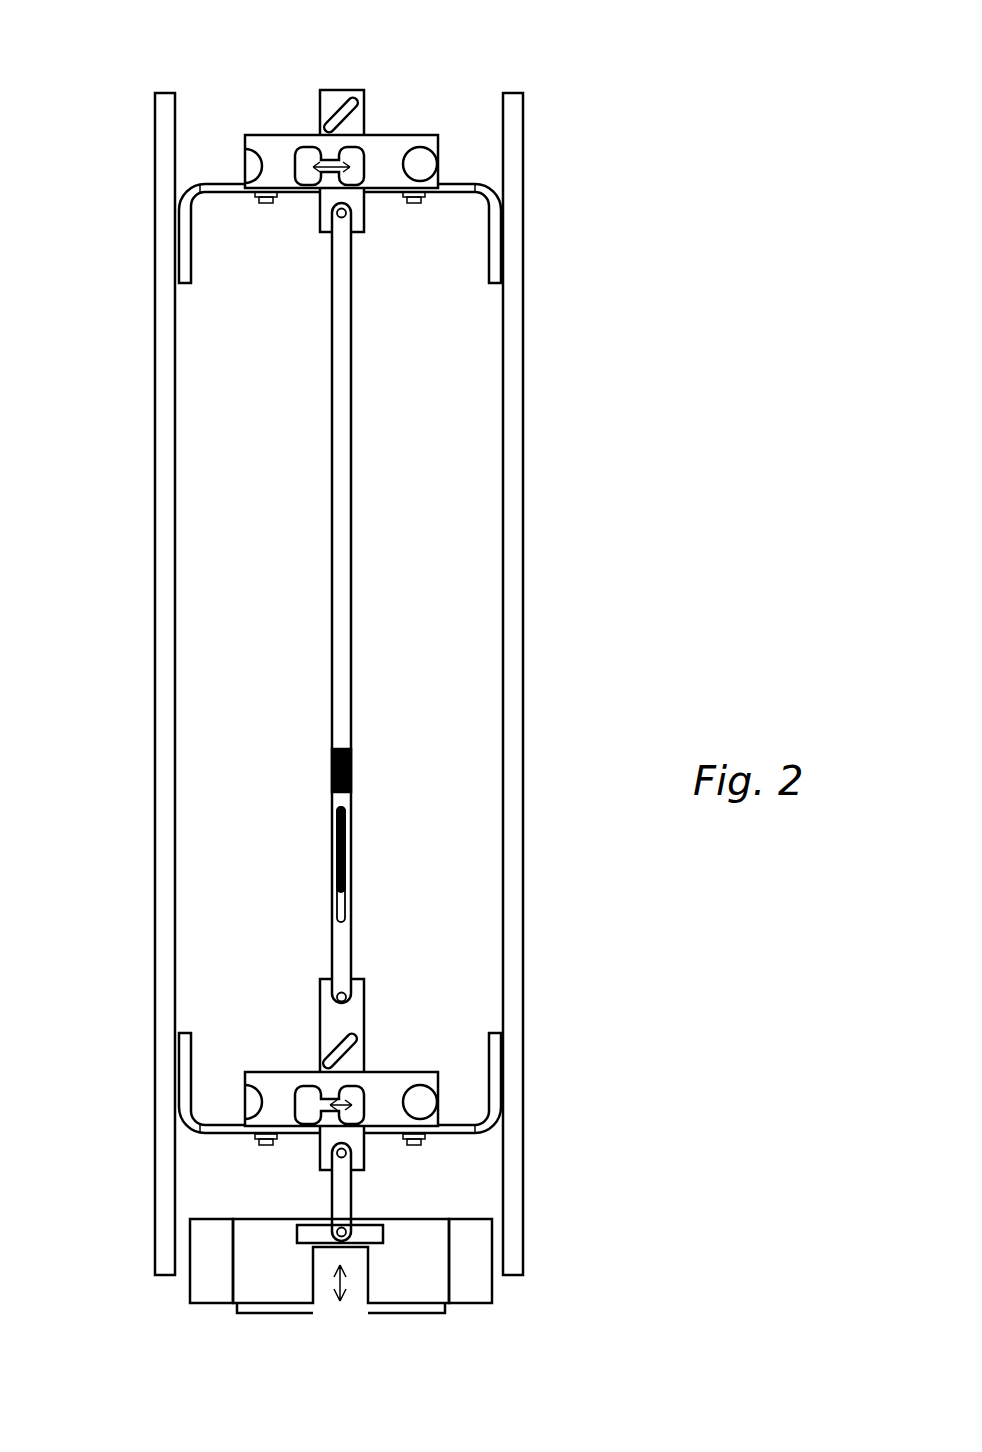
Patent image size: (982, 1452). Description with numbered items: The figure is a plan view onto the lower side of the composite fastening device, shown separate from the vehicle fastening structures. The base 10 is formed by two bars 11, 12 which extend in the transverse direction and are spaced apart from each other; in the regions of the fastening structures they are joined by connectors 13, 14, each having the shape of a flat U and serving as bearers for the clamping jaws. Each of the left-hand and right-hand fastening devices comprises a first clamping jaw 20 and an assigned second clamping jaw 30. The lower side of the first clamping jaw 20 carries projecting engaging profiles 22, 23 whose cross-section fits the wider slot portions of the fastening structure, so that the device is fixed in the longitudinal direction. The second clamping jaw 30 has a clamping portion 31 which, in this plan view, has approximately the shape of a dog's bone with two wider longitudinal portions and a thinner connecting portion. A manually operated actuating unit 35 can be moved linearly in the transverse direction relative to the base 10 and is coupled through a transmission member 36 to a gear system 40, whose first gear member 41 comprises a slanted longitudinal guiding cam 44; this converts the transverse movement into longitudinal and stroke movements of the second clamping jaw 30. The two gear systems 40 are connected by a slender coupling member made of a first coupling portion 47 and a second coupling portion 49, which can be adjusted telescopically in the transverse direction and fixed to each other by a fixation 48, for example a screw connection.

The base 10 is at (556, 424).
The bar 11 is at (518, 548).
The bar 12 is at (158, 545).
The connector 13 is at (493, 1128).
The connector 14 is at (492, 193).
The first clamping jaw 20 is at (275, 143).
The engaging profile 22 is at (250, 165).
The engaging profile 23 is at (421, 162).
The second clamping jaw 30 is at (328, 158).
The clamping portion 31 is at (350, 186).
The actuating unit 35 is at (465, 1240).
The transmission member 36 is at (348, 1193).
The gear system 40 is at (416, 40).
The first gear member 41 is at (364, 112).
The longitudinal guiding cam 44 is at (368, 123).
The first coupling portion 47 is at (335, 925).
The fixation 48 is at (340, 868).
The second coupling portion 49 is at (338, 722).